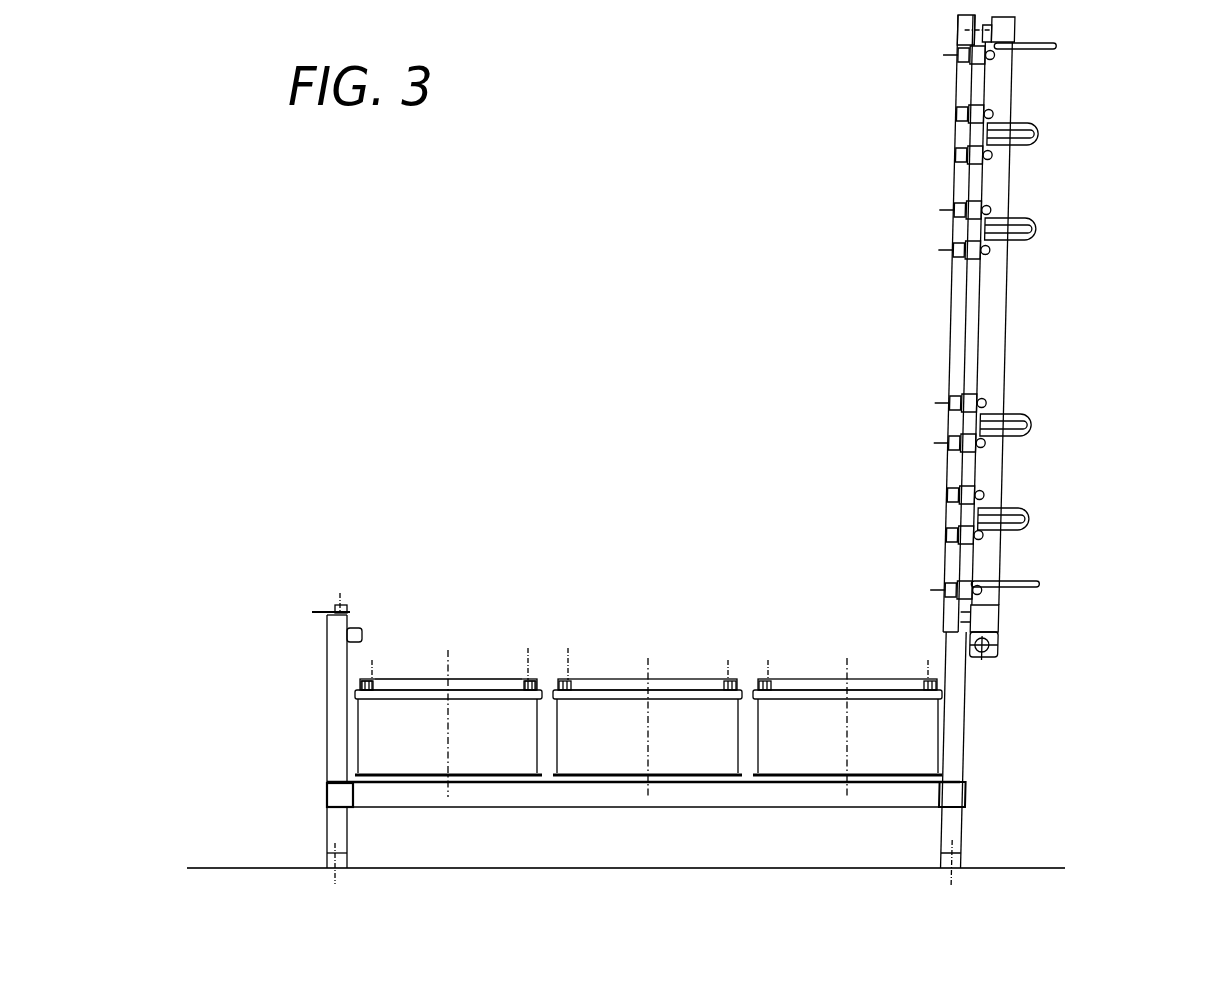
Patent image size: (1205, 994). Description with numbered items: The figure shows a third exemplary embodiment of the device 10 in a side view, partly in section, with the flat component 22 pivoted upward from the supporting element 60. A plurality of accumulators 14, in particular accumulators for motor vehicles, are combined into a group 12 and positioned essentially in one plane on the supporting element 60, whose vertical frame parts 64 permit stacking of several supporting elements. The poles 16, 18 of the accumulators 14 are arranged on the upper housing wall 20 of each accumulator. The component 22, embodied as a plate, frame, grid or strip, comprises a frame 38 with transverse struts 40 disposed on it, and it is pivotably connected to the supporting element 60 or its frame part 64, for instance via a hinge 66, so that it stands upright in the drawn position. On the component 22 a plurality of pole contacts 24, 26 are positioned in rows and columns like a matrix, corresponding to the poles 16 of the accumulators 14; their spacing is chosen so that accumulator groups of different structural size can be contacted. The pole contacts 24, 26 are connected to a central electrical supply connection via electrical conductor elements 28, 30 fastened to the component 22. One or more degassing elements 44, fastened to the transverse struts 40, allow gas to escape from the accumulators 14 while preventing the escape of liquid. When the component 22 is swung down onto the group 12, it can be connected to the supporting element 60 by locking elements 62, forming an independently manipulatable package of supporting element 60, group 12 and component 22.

The device 10 is at (1062, 298).
The group 12 is at (433, 582).
The accumulators 14 is at (387, 737).
The poles 16 is at (372, 683).
The poles 18 is at (530, 683).
The upper housing wall 20 is at (472, 678).
The flat component 22 is at (958, 297).
The pole contacts 24 is at (960, 405).
The pole contacts 26 is at (947, 592).
The electrical conductor elements 28 is at (1027, 520).
The electrical conductor elements 30 is at (1030, 427).
The frame 38 is at (1017, 28).
The transverse struts 40 is at (965, 79).
The degassing element 44 is at (933, 183).
The supporting element 60 is at (513, 791).
The locking elements 62 is at (323, 638).
The vertical frame parts 64 is at (960, 675).
The hinge 66 is at (996, 645).